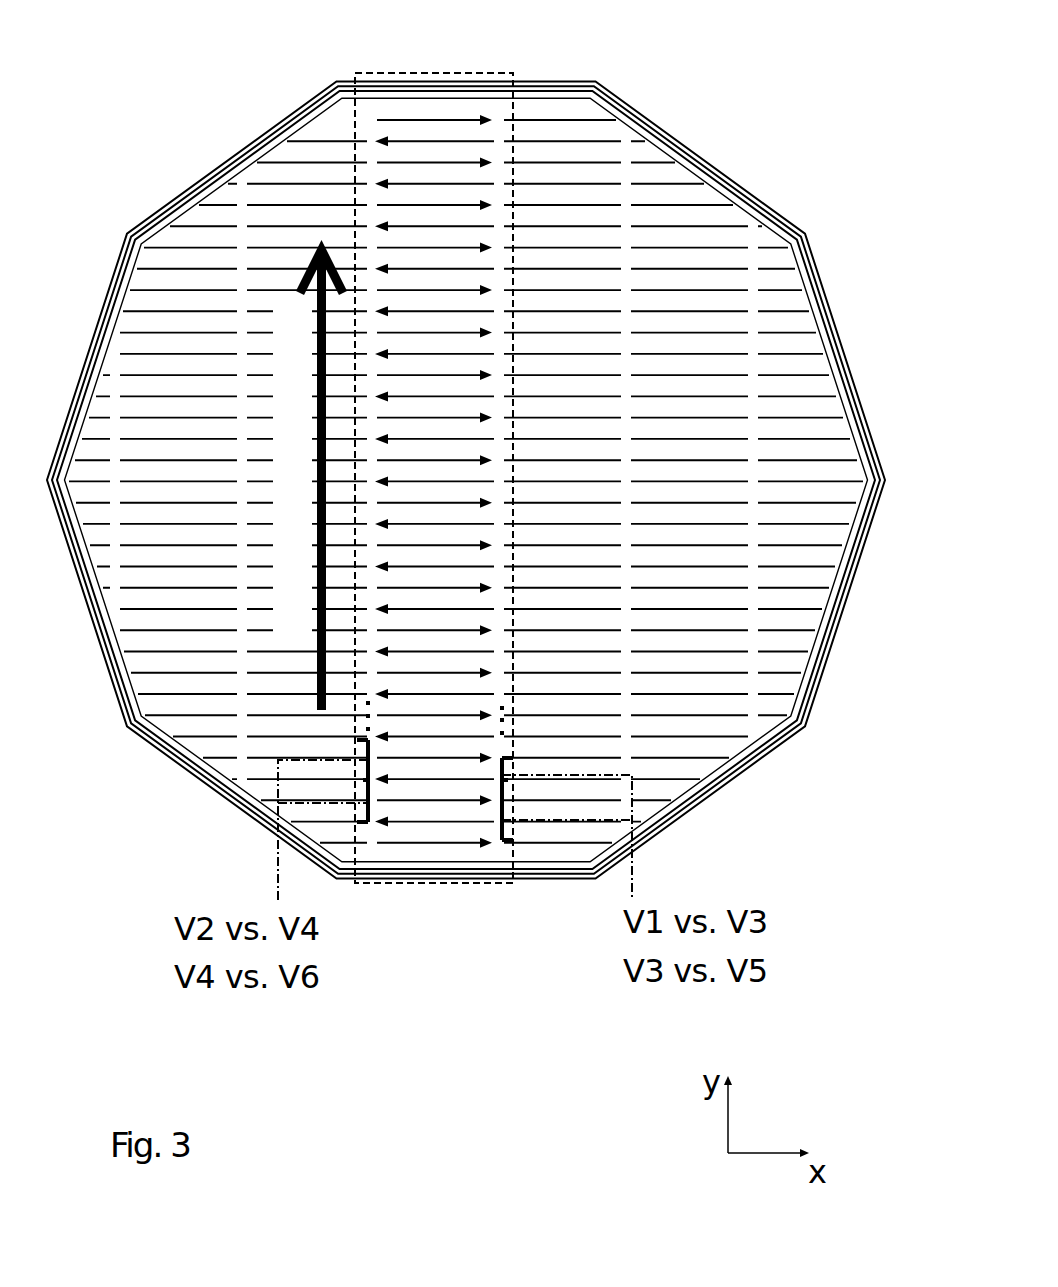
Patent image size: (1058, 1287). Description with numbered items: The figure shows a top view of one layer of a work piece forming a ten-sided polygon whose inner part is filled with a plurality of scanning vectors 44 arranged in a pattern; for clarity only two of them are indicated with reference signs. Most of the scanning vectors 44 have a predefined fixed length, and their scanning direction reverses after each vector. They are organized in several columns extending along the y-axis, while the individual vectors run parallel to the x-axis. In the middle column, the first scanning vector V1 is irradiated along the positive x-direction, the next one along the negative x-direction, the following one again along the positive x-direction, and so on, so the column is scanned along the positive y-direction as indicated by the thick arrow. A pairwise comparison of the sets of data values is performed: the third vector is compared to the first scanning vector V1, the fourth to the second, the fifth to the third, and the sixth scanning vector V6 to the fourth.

The scanning vectors 44 is at (452, 120).
The first scanning vector V1 is at (412, 843).
The sixth scanning vector V6 is at (443, 739).